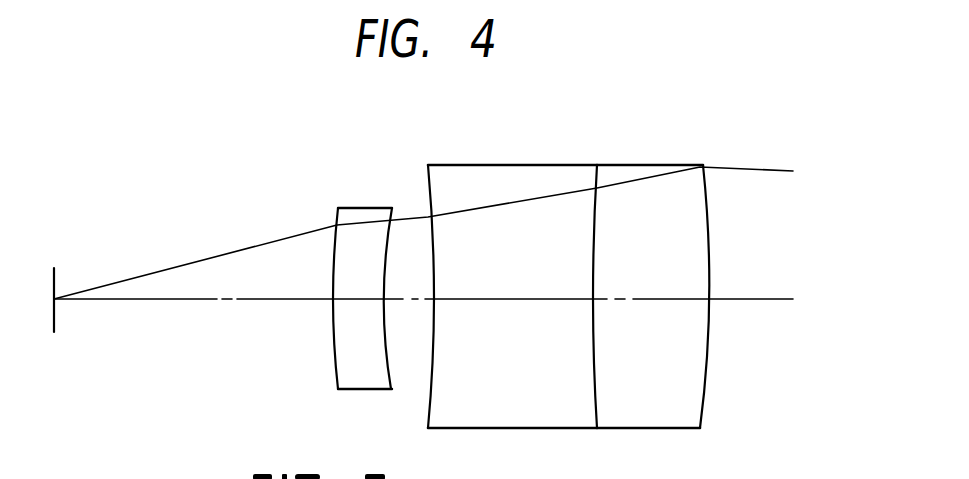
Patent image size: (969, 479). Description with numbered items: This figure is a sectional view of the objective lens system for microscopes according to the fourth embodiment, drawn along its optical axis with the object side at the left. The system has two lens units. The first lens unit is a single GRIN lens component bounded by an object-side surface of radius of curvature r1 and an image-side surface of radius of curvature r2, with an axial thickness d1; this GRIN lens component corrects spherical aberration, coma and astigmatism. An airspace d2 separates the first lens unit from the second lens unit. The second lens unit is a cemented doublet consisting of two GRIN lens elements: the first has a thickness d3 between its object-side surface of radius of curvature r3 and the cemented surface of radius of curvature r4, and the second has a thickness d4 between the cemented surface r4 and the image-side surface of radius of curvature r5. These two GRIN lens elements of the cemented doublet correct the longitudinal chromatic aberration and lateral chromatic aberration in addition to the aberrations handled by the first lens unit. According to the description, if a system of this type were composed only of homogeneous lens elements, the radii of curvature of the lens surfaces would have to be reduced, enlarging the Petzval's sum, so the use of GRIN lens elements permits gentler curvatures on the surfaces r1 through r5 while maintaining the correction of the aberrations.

The radius of curvature of first lens surface r1 is at (339, 212).
The radius of curvature of second lens surface r2 is at (392, 210).
The radius of curvature of third lens surface r3 is at (429, 188).
The radius of curvature of fourth lens surface r4 is at (596, 180).
The radius of curvature of fifth lens surface r5 is at (703, 183).
The thickness of first lens element d1 is at (352, 300).
The airspace between first and second lens units d2 is at (402, 300).
The thickness of second lens element d3 is at (502, 300).
The thickness of third lens element d4 is at (672, 300).